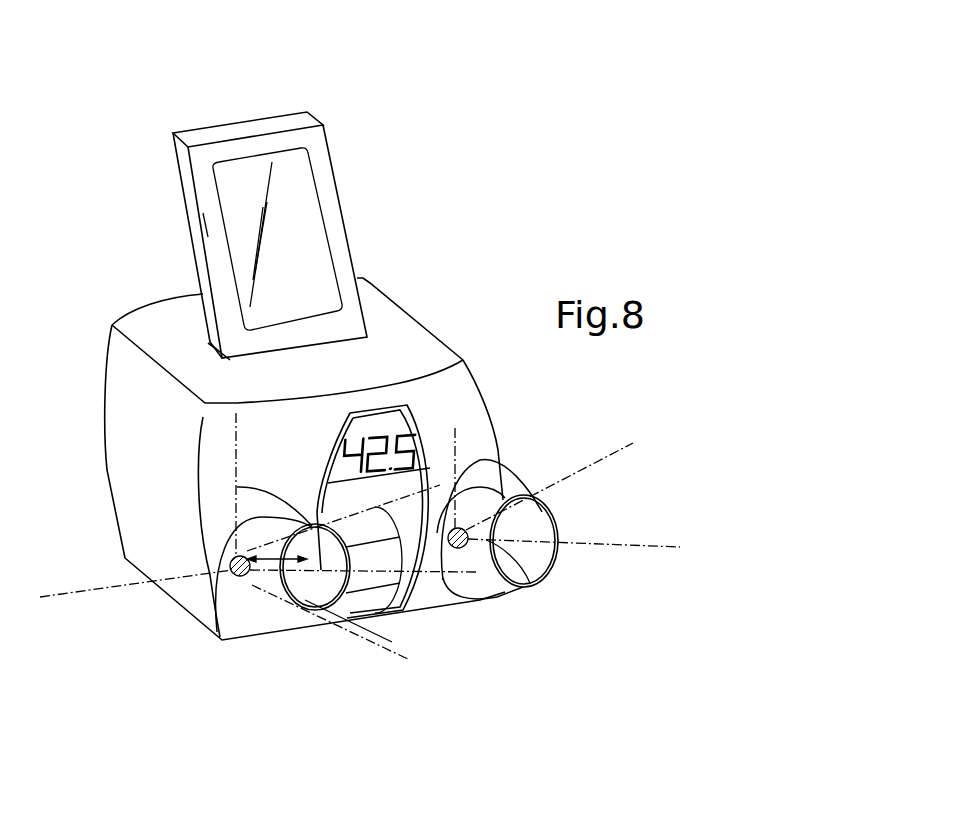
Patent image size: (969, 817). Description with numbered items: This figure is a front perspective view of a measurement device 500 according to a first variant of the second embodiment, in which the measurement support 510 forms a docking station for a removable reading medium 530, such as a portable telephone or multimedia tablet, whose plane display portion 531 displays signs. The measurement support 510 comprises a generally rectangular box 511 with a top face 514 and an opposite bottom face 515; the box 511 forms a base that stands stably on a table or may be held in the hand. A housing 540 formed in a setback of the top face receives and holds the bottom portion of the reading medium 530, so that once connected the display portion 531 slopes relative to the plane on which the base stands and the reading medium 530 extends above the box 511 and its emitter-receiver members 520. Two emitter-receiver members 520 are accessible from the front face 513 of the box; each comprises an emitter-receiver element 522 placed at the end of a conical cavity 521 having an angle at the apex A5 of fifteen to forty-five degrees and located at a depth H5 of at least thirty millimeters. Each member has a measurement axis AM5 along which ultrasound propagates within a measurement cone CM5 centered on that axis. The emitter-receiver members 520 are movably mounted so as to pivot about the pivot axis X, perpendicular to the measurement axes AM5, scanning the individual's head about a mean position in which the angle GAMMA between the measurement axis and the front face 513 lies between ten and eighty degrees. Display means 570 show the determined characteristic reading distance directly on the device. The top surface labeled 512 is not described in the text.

The measurement device 500 is at (116, 185).
The measurement support 510 is at (410, 340).
The box 511 is at (123, 513).
The top surface 512 is at (168, 286).
The front face 513 is at (213, 439).
The top face 514 is at (167, 352).
The bottom face 515 is at (423, 613).
The emitter-receiver member 520 is at (269, 617).
The conical cavity 521 is at (295, 577).
The emitter-receiver element 522 is at (203, 597).
The reading medium 530 is at (285, 140).
The display portion 531 is at (298, 180).
The housing 540 is at (283, 353).
The display means 570 is at (423, 447).
The depth H5 is at (200, 543).
The pivot axis X is at (80, 590).
The measurement cone CM5 is at (343, 515).
The measurement axis AM5 is at (460, 607).
The angle GAMMA is at (275, 487).
The angle at the apex A5 is at (385, 636).